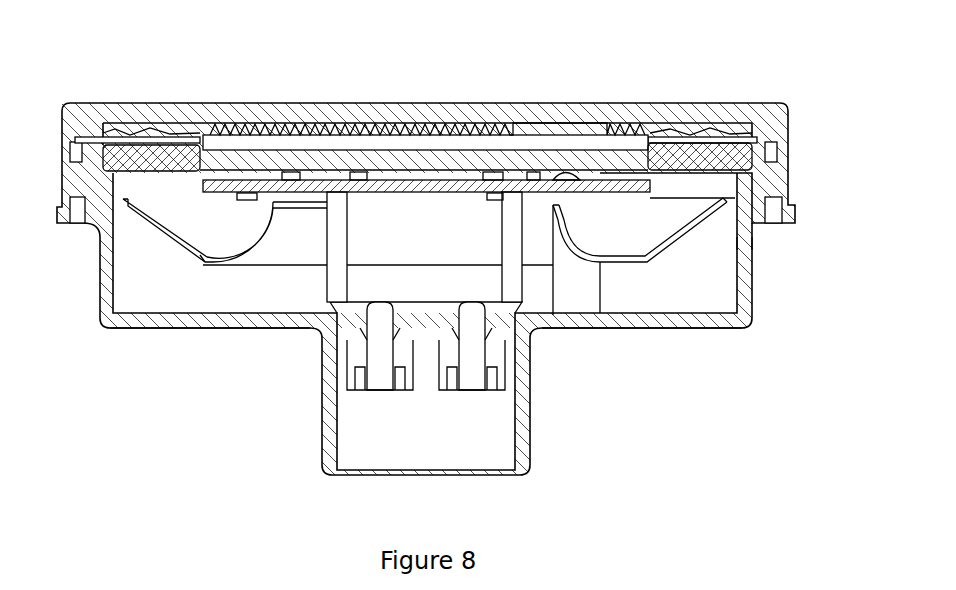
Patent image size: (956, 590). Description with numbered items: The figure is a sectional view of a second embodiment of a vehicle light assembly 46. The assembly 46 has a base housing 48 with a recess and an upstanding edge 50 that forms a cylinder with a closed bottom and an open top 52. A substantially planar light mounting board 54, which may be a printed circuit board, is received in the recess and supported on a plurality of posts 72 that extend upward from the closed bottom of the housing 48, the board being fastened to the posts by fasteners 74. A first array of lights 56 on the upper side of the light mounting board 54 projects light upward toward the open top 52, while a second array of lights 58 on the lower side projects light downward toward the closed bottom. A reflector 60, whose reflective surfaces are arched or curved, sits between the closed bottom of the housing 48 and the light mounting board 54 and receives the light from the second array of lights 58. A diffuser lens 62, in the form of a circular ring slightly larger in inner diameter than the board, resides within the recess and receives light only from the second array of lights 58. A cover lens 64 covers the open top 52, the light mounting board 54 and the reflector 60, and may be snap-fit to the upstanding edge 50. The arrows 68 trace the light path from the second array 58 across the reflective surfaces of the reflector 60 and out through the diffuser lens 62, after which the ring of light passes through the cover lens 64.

The vehicle light assembly 46 is at (455, 243).
The base housing 48 is at (636, 331).
The upstanding edge 50 is at (470, 324).
The open top 52 is at (733, 188).
The light mounting board 54 is at (532, 187).
The first array of lights 56 is at (566, 174).
The second array of lights 58 is at (617, 190).
The reflector 60 is at (207, 248).
The diffuser lens 62 is at (140, 152).
The cover lens 64 is at (375, 112).
The arrows 68 is at (165, 213).
The posts 72 is at (373, 276).
The fasteners 74 is at (338, 185).